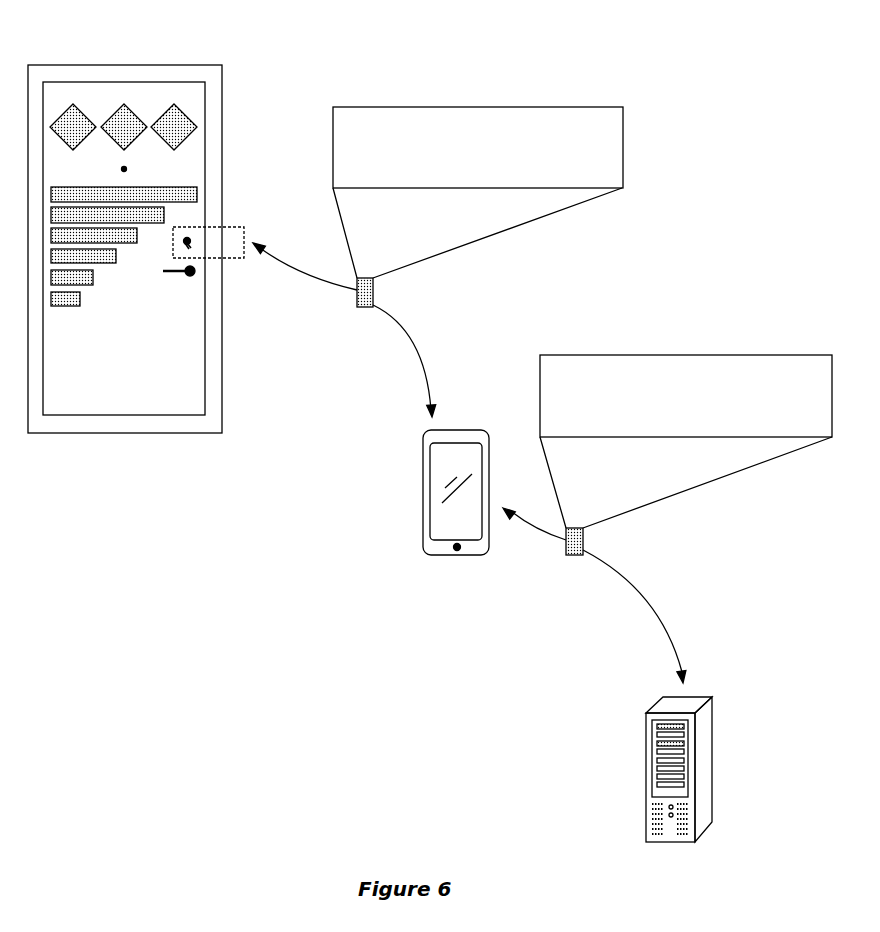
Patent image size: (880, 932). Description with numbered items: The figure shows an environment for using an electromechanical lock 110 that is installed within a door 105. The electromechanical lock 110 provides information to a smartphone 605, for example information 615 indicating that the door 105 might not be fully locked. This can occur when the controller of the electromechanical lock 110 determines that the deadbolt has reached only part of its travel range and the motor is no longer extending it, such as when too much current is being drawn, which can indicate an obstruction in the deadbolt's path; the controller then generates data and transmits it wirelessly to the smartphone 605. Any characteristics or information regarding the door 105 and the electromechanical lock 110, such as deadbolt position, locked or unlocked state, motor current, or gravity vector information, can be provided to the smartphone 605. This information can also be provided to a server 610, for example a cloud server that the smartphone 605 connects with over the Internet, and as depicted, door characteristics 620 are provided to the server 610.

The door 105 is at (155, 82).
The electromechanical lock 110 is at (195, 225).
The smartphone 605 is at (447, 430).
The server 610 is at (646, 742).
The information 615 is at (497, 107).
The door characteristics 620 is at (705, 355).